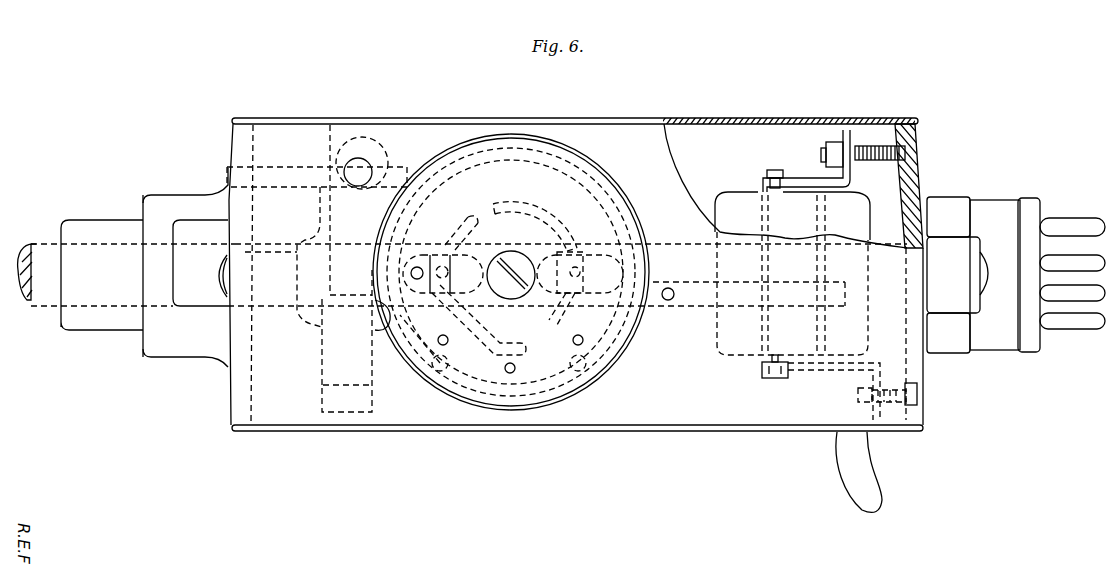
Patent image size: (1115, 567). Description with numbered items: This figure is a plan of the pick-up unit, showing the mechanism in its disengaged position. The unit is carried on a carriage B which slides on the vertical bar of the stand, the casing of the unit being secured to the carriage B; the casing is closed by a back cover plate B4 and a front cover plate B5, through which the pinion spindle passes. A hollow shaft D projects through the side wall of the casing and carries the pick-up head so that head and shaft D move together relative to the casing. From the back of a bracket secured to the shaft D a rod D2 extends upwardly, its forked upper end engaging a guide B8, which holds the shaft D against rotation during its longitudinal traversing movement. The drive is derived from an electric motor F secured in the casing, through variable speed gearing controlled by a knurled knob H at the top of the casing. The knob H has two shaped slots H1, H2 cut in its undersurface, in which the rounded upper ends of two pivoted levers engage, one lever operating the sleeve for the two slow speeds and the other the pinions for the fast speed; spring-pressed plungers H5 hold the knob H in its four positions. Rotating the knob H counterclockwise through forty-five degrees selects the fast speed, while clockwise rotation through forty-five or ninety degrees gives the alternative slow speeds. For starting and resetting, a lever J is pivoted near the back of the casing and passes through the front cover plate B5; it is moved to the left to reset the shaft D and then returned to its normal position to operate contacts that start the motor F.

The carriage B is at (740, 397).
The back cover plate B4 is at (249, 124).
The front cover plate B5 is at (238, 432).
The guide B8 is at (298, 167).
The hollow shaft D is at (320, 352).
The rod D2 is at (362, 165).
The knurled knob H is at (560, 192).
The shaped slot H1 is at (454, 215).
The shaped slot H2 is at (525, 205).
The spring-pressed plungers H5 is at (578, 347).
The electric motor F is at (848, 212).
The lever J is at (872, 470).